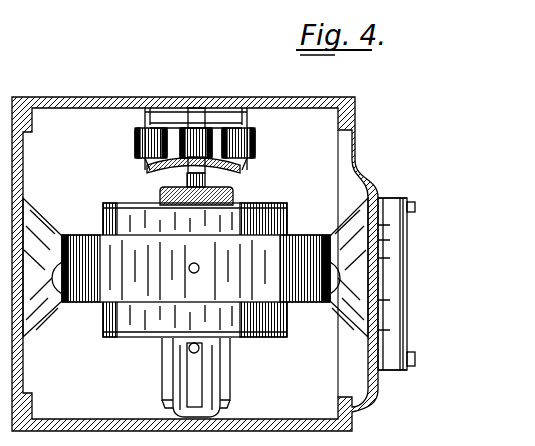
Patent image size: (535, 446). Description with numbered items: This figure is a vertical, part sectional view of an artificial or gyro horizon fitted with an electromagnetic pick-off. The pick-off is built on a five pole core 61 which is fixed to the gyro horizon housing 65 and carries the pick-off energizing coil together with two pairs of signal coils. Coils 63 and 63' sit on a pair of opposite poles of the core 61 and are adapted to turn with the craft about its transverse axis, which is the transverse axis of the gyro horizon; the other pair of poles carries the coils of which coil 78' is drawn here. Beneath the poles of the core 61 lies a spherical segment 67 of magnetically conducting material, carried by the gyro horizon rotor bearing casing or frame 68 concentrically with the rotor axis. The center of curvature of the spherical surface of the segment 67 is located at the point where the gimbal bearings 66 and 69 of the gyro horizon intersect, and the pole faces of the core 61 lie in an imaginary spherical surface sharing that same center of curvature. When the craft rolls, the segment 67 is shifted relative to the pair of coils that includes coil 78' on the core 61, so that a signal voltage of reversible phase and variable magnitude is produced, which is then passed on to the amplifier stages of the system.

The five pole core 61 is at (143, 115).
The coil 63 is at (135, 146).
The coil 63' is at (257, 143).
The gyro horizon housing 65 is at (50, 97).
The gimbal bearing 66 is at (200, 266).
The spherical segment 67 is at (150, 169).
The rotor bearing casing 68 is at (272, 211).
The gimbal bearing 69 is at (42, 310).
The coil 78' is at (214, 113).